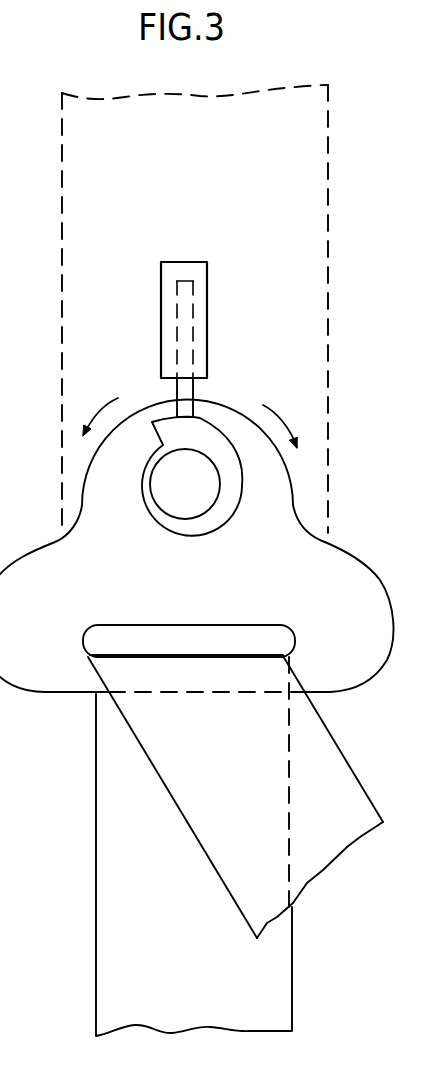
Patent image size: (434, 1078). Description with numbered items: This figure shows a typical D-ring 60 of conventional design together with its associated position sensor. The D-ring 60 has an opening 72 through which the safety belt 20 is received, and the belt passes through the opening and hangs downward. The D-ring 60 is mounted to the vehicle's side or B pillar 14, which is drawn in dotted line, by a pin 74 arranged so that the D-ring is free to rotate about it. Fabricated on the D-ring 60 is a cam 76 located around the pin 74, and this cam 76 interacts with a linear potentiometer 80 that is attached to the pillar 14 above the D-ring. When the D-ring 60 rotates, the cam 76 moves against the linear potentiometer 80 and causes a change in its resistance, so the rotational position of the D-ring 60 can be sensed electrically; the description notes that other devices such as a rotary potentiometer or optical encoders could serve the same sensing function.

The pillar 14 is at (330, 232).
The safety belt 20 is at (349, 763).
The D-ring 60 is at (52, 432).
The opening 72 is at (138, 631).
The pin 74 is at (155, 519).
The cam 76 is at (215, 432).
The linear potentiometer 80 is at (208, 285).